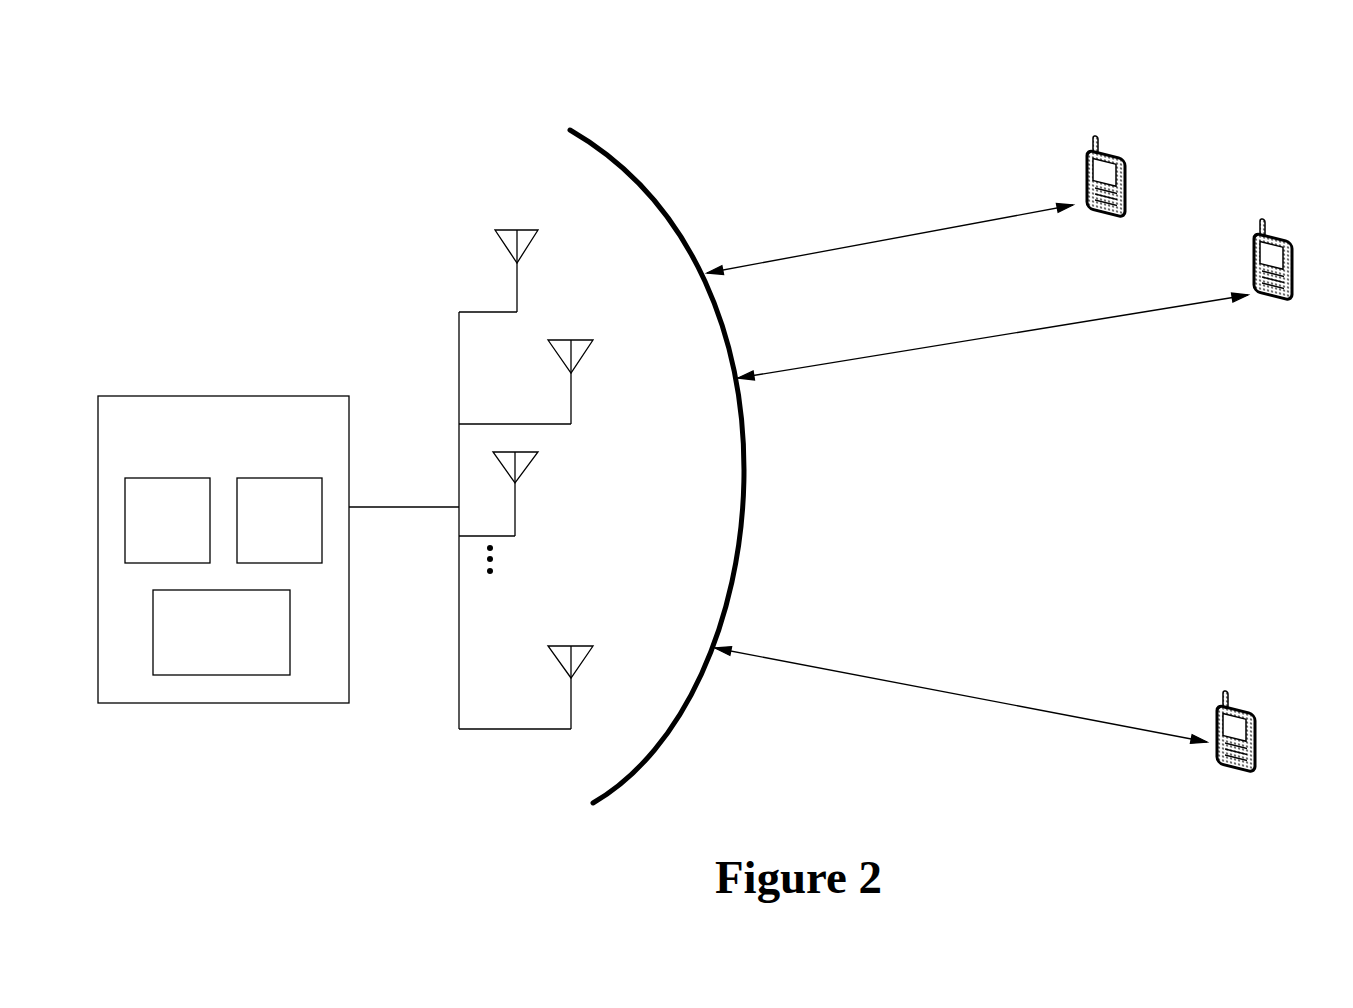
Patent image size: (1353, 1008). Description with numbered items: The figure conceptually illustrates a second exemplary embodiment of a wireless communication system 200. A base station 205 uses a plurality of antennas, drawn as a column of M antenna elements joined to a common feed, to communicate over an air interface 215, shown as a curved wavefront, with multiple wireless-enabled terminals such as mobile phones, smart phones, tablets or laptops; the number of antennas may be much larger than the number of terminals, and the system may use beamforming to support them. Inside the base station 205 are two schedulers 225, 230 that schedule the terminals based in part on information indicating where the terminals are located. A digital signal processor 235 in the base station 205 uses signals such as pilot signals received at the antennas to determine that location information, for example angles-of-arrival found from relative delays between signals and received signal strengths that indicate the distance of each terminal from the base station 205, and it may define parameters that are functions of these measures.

The wireless communication system 200 is at (1237, 110).
The base station 205 is at (314, 435).
The air interface 215 is at (630, 168).
The scheduler 225 is at (184, 552).
The scheduler 230 is at (297, 552).
The digital signal processor (DSP) 235 is at (237, 663).